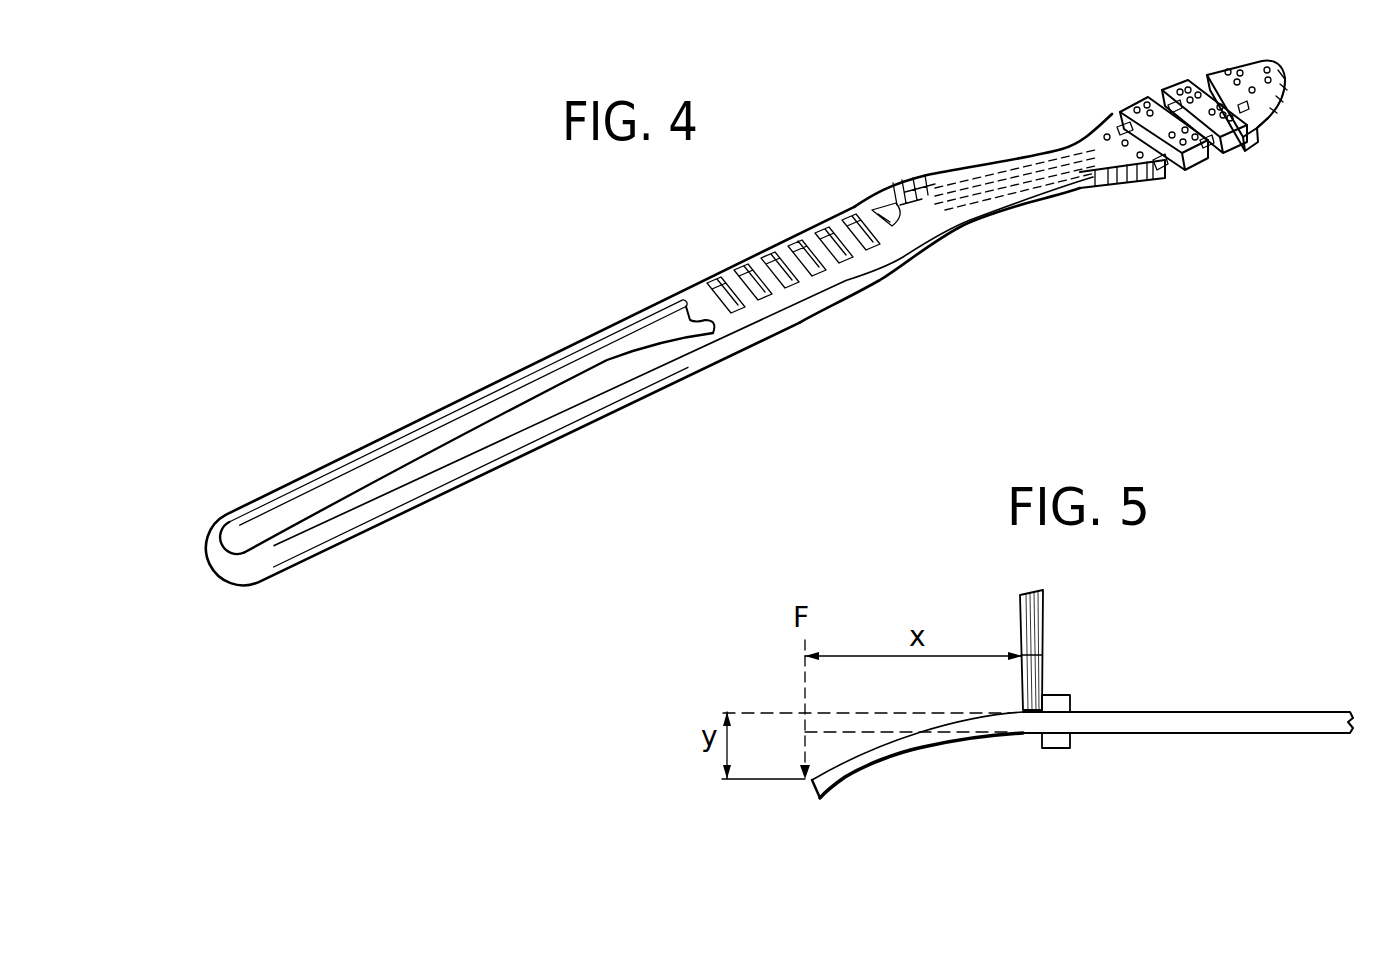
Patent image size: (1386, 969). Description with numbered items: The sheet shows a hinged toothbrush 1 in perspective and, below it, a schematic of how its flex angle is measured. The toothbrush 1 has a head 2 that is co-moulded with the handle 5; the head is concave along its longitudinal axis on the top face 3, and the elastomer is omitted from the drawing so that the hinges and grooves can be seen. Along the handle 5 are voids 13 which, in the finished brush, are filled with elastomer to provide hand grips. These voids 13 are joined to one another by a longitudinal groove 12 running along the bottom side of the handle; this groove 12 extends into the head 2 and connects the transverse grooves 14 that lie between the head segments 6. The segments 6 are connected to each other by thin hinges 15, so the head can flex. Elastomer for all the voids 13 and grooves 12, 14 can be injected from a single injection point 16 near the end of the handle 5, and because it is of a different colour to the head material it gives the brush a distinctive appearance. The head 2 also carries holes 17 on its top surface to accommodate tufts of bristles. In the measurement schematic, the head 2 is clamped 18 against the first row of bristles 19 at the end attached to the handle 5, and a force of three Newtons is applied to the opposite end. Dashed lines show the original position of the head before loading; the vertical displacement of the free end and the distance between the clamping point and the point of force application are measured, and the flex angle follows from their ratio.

In FIG. 4, the toothbrush 1 is at (772, 347).
In FIG. 4, the head 2 is at (1116, 86).
In FIG. 5, the head 2 is at (917, 762).
In FIG. 4, the top face 3 is at (1170, 76).
In FIG. 5, the handle 5 is at (1228, 735).
In FIG. 4, the segments 6 is at (1270, 107).
In FIG. 4, the longitudinal groove 12 is at (986, 186).
In FIG. 4, the voids 13 is at (770, 270).
In FIG. 4, the transverse grooves 14 is at (1175, 178).
In FIG. 4, the thin hinges 15 is at (1188, 172).
In FIG. 4, the injection point 16 is at (257, 548).
In FIG. 4, the holes 17 is at (1244, 68).
In FIG. 5, the clamp 18 is at (1068, 698).
In FIG. 5, the first row of bristles 19 is at (1047, 598).